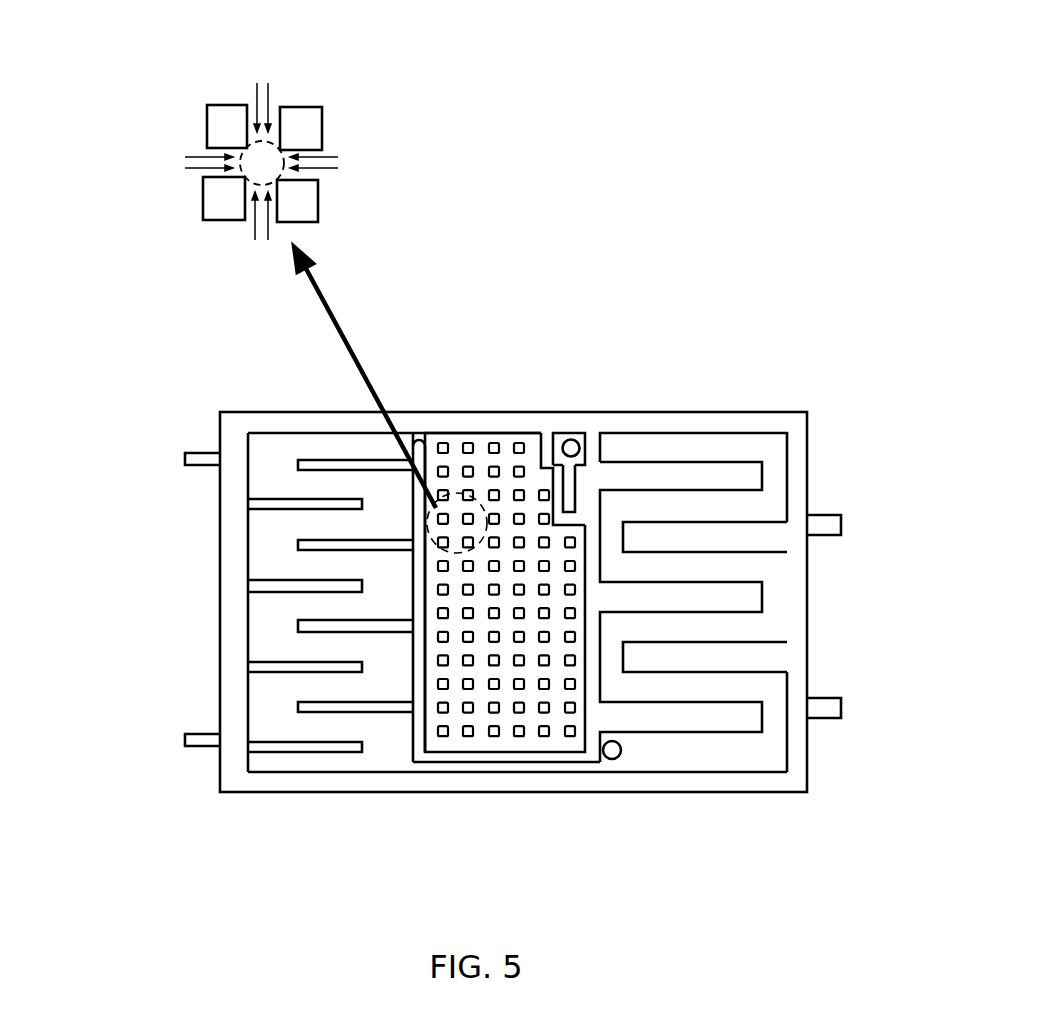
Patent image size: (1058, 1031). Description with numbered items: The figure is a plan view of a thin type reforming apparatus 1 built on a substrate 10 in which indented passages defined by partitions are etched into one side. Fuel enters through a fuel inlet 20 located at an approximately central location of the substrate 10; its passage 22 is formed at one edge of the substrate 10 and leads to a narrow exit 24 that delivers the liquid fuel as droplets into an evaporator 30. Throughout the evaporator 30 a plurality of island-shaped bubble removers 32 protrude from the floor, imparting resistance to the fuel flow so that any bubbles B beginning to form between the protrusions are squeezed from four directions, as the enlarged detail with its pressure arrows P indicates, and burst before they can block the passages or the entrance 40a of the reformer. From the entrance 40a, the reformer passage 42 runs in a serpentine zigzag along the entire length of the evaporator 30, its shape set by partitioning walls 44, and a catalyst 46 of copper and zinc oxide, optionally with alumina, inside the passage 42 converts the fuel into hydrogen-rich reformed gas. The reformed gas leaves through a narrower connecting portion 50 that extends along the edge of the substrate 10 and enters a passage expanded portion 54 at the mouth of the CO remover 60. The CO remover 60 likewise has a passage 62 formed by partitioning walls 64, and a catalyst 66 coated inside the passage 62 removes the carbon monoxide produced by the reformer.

The thin type reforming apparatus 1 is at (856, 396).
The substrate 10 is at (807, 623).
The fuel inlet 20 is at (558, 430).
The passage 22 is at (580, 459).
The narrow exit 24 is at (580, 492).
The evaporator 30 is at (483, 454).
The bubble removers 32 is at (522, 660).
The entrance 40a is at (420, 432).
The passage 42 is at (258, 586).
The partitioning walls 44 is at (317, 463).
The catalyst 46 is at (320, 643).
The connecting portion 50 is at (517, 768).
The passage expanded portion 54 is at (613, 763).
The CO remover 60 is at (762, 562).
The passage 62 is at (762, 562).
The partitioning walls 64 is at (720, 540).
The catalyst 66 is at (742, 445).
The bubbles B is at (267, 153).
The pressure P is at (260, 158).